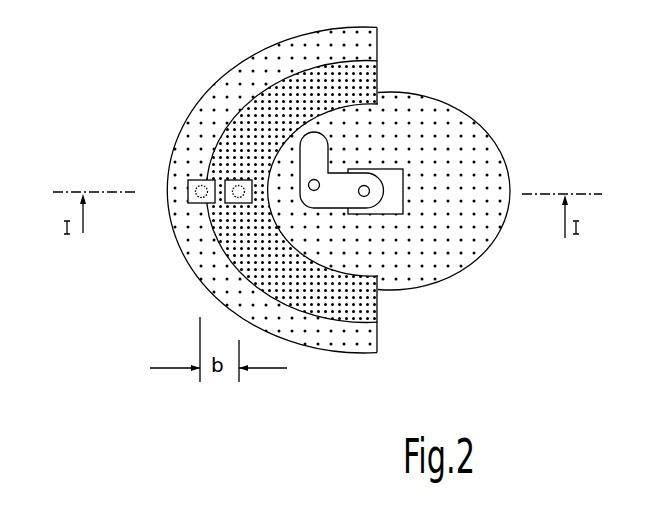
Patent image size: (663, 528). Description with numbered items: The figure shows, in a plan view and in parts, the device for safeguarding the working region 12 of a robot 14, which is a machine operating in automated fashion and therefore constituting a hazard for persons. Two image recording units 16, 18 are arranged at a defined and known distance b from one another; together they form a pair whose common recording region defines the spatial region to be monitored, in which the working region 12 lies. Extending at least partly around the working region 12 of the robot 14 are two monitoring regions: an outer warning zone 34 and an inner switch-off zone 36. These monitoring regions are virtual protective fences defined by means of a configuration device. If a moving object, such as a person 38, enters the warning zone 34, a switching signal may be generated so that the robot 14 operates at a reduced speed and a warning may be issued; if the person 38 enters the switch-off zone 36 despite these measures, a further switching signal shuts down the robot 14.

The working region 12 is at (470, 123).
The robot 14 is at (388, 208).
The image recording unit 16 is at (193, 203).
The image recording unit 18 is at (240, 177).
The warning zone 34 is at (193, 0).
The switch-off zone 36 is at (358, 300).
The person 38 is at (44, 9).